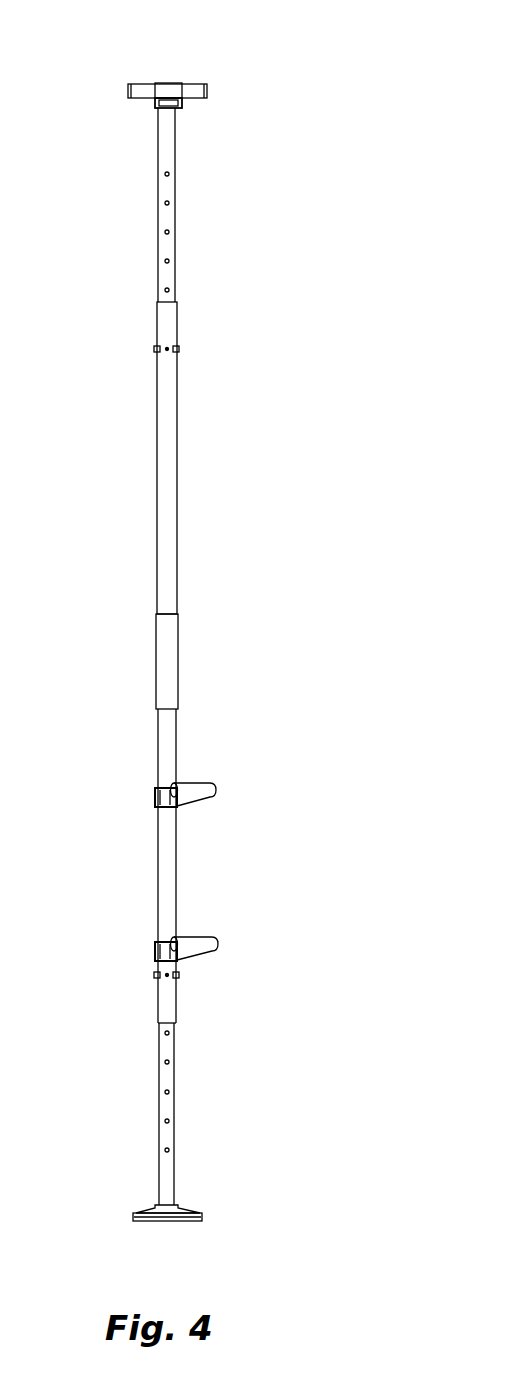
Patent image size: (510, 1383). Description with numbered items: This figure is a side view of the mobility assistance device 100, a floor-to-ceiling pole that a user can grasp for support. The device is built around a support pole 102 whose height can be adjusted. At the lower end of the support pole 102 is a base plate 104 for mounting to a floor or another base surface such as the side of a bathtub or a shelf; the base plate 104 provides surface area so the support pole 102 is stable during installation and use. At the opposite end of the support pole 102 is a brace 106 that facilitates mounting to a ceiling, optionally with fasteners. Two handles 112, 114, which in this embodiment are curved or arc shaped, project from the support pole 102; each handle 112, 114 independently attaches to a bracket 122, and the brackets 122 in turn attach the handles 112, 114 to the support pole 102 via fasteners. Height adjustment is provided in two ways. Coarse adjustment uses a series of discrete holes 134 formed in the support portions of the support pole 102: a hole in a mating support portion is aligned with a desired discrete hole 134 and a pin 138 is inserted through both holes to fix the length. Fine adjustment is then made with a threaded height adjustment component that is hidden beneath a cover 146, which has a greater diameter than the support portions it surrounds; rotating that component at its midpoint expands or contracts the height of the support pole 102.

The mobility assistance device 100 is at (342, 74).
The support pole 102 is at (176, 425).
The base plate 104 is at (202, 1213).
The brace 106 is at (204, 84).
The handle 112 is at (212, 782).
The handle 114 is at (213, 936).
The bracket 122 is at (154, 800).
The discrete holes 134 is at (168, 231).
The pin 138 is at (178, 348).
The cover 146 is at (178, 667).